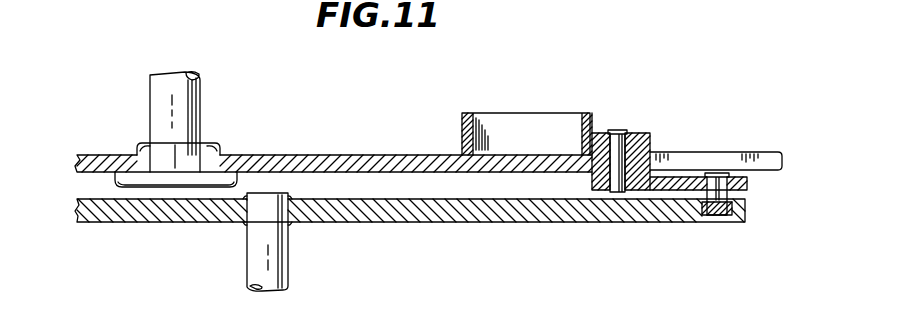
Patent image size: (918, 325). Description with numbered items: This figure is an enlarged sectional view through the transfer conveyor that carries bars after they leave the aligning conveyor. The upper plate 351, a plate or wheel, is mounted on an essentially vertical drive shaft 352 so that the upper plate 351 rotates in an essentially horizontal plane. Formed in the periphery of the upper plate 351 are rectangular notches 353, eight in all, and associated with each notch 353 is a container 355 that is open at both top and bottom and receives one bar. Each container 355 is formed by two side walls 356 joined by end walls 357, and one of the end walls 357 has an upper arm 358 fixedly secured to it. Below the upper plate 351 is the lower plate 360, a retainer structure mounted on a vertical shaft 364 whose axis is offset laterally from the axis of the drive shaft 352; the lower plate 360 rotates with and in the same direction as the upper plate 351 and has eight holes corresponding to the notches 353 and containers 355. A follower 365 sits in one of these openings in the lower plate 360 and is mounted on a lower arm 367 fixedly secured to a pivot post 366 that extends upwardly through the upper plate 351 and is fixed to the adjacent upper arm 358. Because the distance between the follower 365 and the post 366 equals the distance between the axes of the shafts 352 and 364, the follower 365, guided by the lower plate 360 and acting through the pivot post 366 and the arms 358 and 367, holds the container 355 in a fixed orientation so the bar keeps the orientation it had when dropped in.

The upper plate 351 is at (95, 156).
The drive shaft 352 is at (201, 97).
The rectangular notch 353 is at (760, 155).
The container 355 is at (484, 104).
The side wall 356 is at (518, 120).
The end wall 357 is at (588, 115).
The upper arm 358 is at (642, 132).
The lower plate 360 is at (512, 222).
The vertical shaft 364 is at (289, 265).
The follower 365 is at (729, 195).
The pivot post 366 is at (622, 130).
The lower arm 367 is at (678, 177).